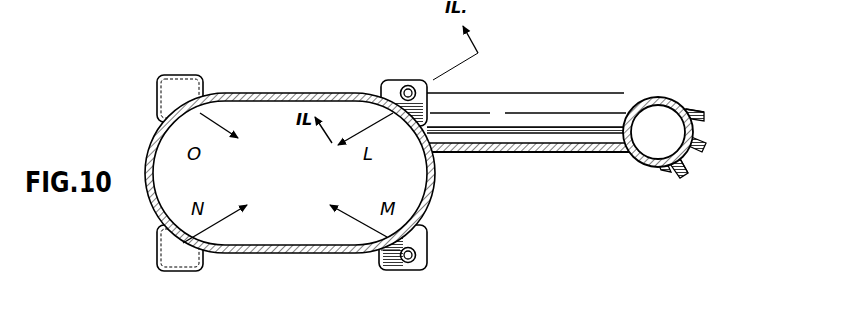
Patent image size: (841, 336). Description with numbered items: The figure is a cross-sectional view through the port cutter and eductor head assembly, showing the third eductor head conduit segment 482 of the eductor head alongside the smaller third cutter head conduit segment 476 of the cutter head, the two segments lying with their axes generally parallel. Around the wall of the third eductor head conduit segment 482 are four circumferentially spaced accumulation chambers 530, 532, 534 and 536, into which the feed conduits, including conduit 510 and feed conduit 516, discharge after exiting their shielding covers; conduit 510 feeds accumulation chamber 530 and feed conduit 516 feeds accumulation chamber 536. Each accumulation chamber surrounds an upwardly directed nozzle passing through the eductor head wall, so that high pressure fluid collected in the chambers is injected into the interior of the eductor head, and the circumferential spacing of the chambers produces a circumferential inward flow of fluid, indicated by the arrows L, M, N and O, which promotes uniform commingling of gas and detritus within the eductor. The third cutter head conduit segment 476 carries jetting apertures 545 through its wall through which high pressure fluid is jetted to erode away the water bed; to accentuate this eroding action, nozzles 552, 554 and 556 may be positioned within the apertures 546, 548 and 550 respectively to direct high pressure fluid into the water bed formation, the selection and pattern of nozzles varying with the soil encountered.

The third cutter head conduit segment 476 is at (670, 76).
The third eductor head conduit segment 482 is at (292, 92).
The conduit 510 is at (420, 263).
The feed conduit 516 is at (404, 84).
The accumulation chamber 530 is at (383, 266).
The accumulation chamber 532 is at (200, 262).
The accumulation chamber 534 is at (197, 57).
The accumulation chamber 536 is at (390, 80).
The jetting apertures 545 is at (634, 204).
The aperture 546 is at (668, 172).
The aperture 548 is at (690, 163).
The aperture 550 is at (690, 110).
The nozzle 552 is at (682, 175).
The nozzle 554 is at (710, 132).
The nozzle 556 is at (710, 106).